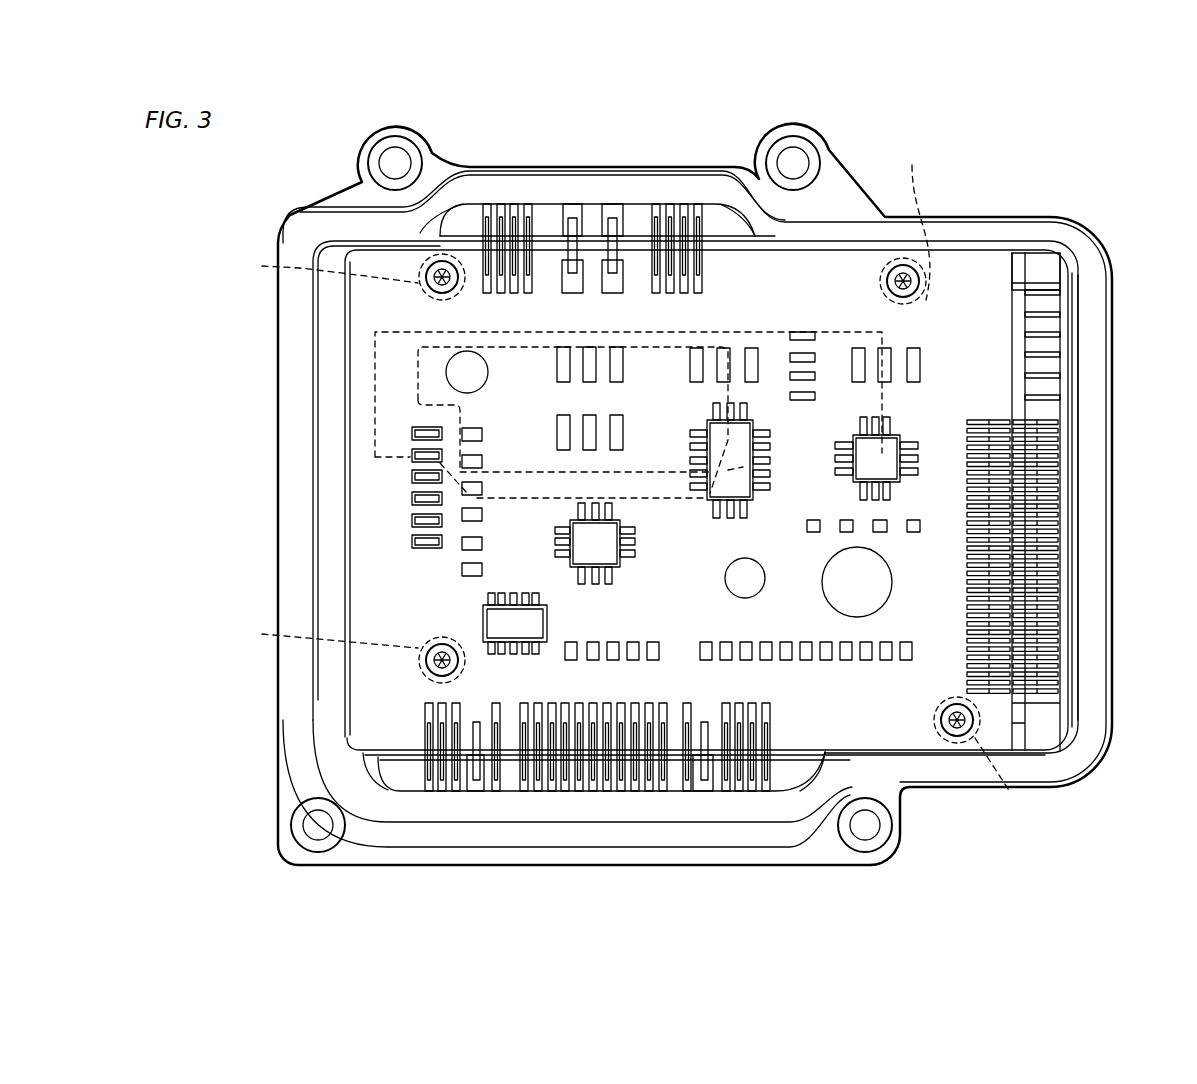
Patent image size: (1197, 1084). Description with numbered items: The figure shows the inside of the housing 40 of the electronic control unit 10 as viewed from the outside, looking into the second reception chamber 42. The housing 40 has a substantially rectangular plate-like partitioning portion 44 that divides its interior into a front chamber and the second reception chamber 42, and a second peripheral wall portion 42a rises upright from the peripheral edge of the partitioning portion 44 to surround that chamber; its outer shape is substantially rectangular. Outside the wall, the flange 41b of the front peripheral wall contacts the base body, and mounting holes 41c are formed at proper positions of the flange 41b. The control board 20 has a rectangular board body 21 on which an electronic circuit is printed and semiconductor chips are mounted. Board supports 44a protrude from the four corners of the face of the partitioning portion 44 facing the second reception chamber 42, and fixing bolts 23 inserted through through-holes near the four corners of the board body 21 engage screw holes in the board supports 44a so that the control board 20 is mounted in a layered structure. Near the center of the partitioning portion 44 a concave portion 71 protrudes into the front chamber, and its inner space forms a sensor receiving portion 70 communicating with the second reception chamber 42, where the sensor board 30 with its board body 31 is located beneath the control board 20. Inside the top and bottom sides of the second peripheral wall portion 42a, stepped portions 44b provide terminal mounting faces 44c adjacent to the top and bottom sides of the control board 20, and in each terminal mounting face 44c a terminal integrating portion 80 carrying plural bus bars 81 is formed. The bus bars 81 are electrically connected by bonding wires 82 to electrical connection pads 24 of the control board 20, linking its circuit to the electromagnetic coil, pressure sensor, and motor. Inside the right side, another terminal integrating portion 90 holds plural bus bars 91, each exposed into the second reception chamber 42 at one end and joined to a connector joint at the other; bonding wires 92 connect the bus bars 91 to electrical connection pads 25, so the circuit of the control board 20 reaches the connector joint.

The electronic control unit 10 is at (1068, 182).
The control board 20 is at (977, 250).
The board body 21 is at (993, 275).
The fixing bolt 23 is at (445, 268).
The electrical connection pad 24 is at (578, 292).
The electrical connection pad 25 is at (977, 422).
The sensor board 30 is at (842, 327).
The board body 31 is at (883, 408).
The housing 40 is at (1115, 313).
The flange 41b is at (888, 798).
The mounting hole 41c is at (385, 155).
The second reception chamber 42 is at (373, 483).
The second peripheral wall portion 42a is at (1090, 358).
The partitioning portion 44 is at (328, 413).
The board support 44a is at (1022, 800).
The stepped portion 44b is at (594, 508).
The terminal mounting face 44c is at (592, 220).
The sensor receiving portion 70 is at (655, 473).
The concave portion 71 is at (510, 462).
The terminal integrating portion 80 is at (588, 508).
The bus bar 81 is at (570, 210).
The bonding wire 82 is at (703, 257).
The terminal integrating portion 90 is at (1029, 513).
The bus bar 91 is at (1040, 423).
The bonding wire 92 is at (1005, 422).